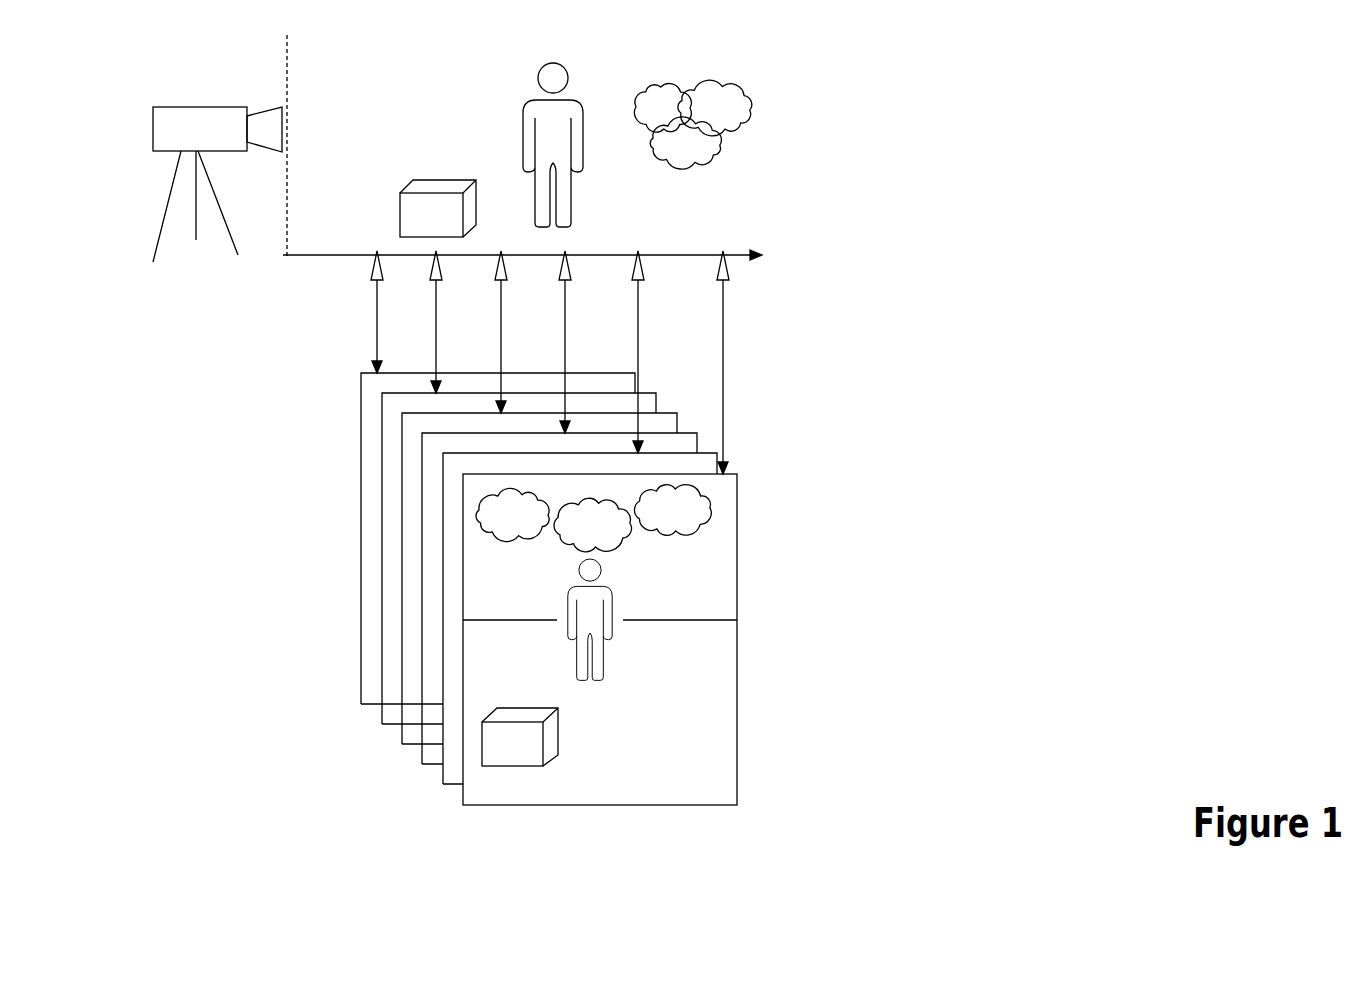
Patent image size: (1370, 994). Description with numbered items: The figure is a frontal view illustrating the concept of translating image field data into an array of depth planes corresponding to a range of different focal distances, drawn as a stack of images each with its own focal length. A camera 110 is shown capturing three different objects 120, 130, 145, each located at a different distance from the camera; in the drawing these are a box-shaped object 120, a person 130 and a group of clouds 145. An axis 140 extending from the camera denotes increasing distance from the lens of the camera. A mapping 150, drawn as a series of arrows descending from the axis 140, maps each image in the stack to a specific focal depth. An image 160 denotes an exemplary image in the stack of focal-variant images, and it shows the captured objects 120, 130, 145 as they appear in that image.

The camera 110 is at (202, 106).
The object 120 is at (445, 192).
The object 130 is at (570, 75).
The object 145 is at (698, 87).
The axis 140 is at (680, 250).
The mapping 150 is at (378, 348).
The image 160 is at (738, 600).